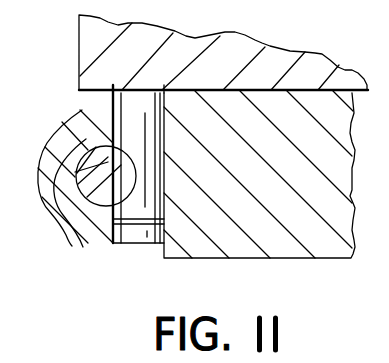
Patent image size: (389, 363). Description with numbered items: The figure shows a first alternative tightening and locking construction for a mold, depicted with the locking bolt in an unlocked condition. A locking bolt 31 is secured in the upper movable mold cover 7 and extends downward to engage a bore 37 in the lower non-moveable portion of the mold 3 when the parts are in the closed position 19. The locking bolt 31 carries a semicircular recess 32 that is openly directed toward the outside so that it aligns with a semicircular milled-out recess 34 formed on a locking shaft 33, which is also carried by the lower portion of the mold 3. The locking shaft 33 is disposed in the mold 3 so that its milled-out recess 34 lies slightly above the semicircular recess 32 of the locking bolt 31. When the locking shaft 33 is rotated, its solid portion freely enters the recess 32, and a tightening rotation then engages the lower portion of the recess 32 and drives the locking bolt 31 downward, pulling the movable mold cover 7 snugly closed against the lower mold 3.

The lower non-moveable portion of the mold 3 is at (325, 240).
The movable mold cover 7 is at (93, 47).
The closed position 19 is at (343, 89).
The locking bolt 31 is at (131, 107).
The semicircular recess 32 is at (106, 202).
The locking shaft 33 is at (127, 175).
The milled-out recess 34 is at (52, 176).
The bore 37 is at (162, 243).